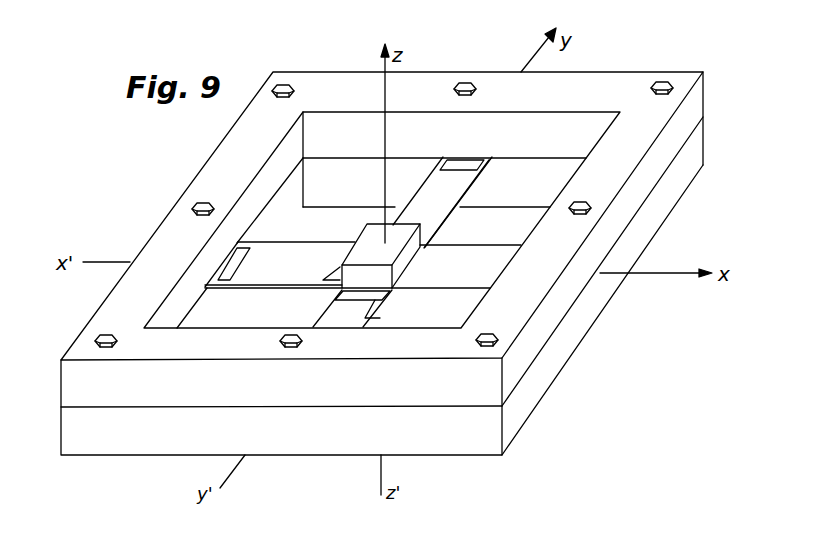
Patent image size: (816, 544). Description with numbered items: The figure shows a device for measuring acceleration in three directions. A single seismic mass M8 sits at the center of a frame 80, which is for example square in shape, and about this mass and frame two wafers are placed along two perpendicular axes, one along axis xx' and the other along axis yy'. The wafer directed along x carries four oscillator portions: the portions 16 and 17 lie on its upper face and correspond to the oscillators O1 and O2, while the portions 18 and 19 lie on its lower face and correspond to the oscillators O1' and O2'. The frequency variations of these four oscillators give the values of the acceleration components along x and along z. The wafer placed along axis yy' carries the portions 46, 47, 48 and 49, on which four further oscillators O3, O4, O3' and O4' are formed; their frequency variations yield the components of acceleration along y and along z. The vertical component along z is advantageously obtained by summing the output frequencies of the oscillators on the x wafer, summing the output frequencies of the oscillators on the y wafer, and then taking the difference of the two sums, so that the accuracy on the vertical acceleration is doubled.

The frame 80 is at (533, 345).
The seismic mass M8 is at (366, 243).
The portion of the upper face of the wafer along x 16 is at (296, 254).
The portion of the lower face of the wafer along x 18 is at (320, 245).
The portion of the lower face of the wafer along x 19 is at (458, 247).
The portion of the upper face of the wafer along x 17 is at (478, 258).
The portion of the wafer along axis yy' 47 is at (447, 197).
The portion of the wafer along axis yy' 49 is at (481, 172).
The portion of the wafer along axis yy' 46 is at (381, 301).
The portion of the wafer along axis yy' 48 is at (375, 320).